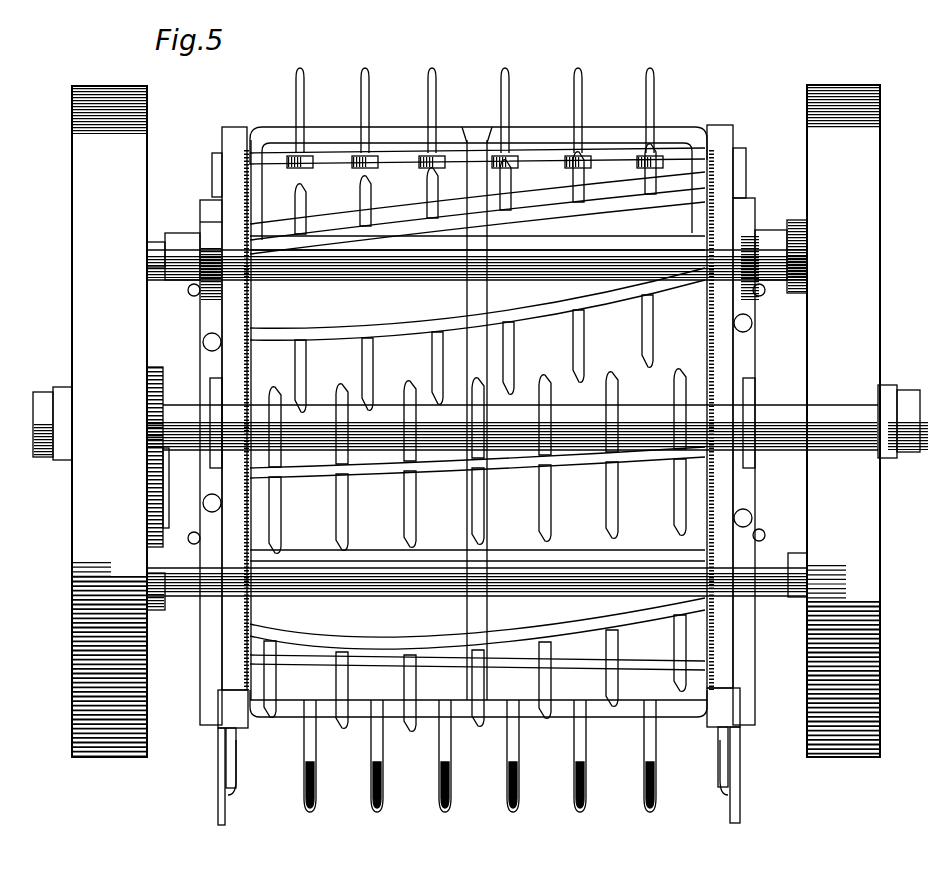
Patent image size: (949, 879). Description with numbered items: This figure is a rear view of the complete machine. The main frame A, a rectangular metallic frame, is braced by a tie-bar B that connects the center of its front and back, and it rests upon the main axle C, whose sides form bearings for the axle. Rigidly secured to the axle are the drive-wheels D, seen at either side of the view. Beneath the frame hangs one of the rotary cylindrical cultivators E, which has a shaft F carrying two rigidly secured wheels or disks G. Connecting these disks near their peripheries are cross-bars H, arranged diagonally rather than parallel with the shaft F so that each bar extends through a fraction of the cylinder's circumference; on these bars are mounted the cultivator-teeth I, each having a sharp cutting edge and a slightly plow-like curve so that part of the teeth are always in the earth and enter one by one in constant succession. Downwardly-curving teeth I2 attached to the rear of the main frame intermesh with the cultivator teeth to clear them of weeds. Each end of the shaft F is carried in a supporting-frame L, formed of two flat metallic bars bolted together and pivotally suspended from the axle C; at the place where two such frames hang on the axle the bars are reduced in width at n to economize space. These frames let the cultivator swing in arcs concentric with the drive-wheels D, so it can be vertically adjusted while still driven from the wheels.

The main frame A is at (256, 490).
The tie-bar B is at (482, 538).
The main axle C is at (775, 408).
The drive-wheel D is at (476, 421).
The rotary cylindrical cultivator E is at (478, 426).
The cultivator shaft F is at (598, 248).
The disk G is at (710, 214).
The cross-bar H is at (415, 327).
The cultivator-tooth I is at (363, 88).
The downwardly-curving tooth I2 is at (480, 756).
The supporting-frame L is at (209, 480).
The reduced-width portion n is at (210, 389).